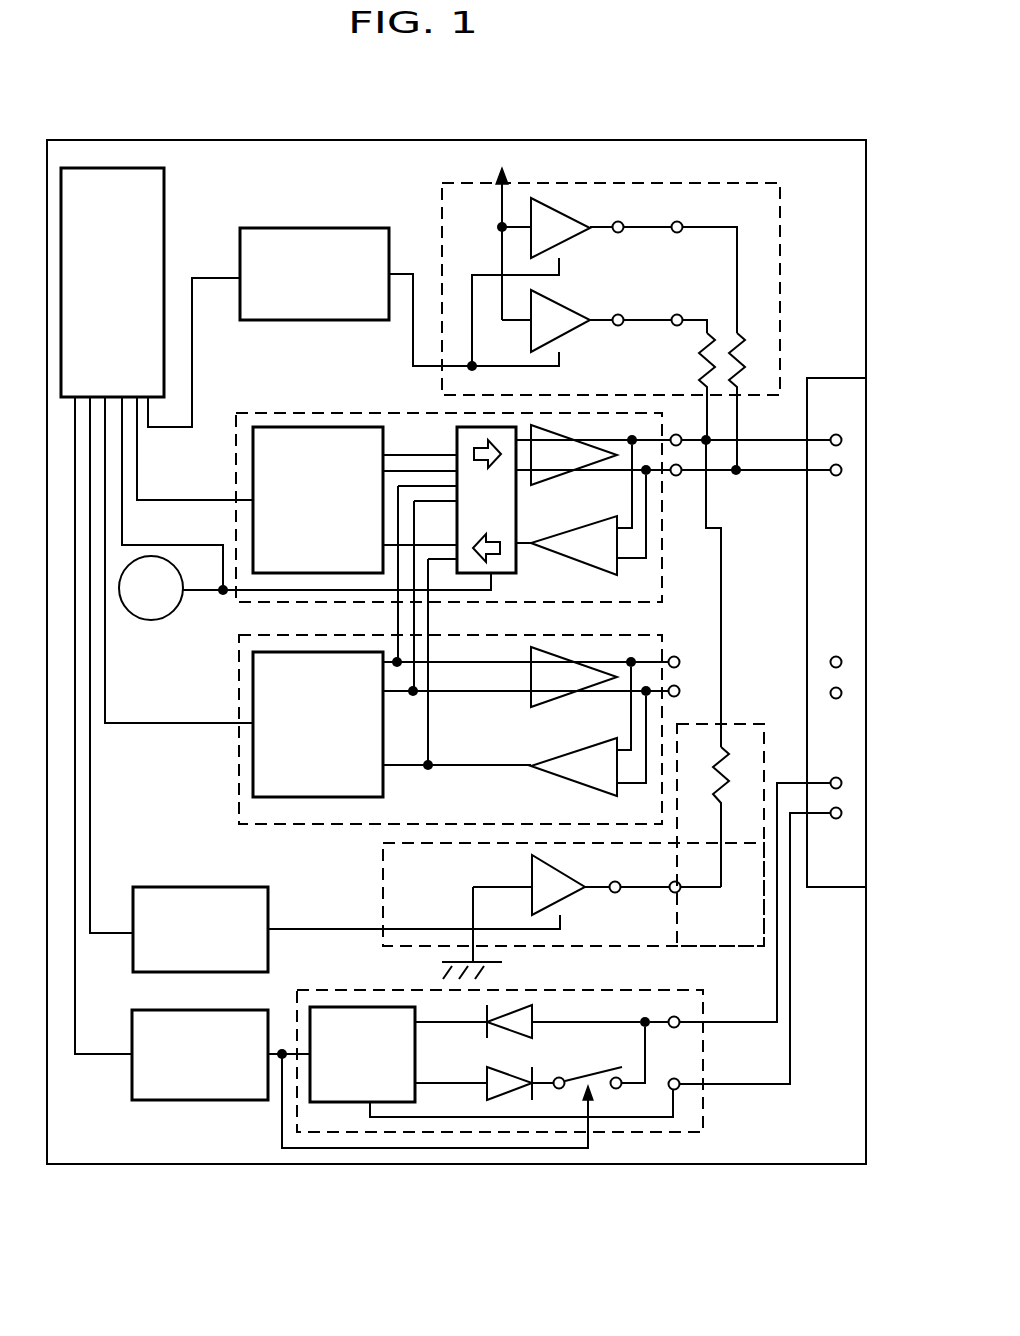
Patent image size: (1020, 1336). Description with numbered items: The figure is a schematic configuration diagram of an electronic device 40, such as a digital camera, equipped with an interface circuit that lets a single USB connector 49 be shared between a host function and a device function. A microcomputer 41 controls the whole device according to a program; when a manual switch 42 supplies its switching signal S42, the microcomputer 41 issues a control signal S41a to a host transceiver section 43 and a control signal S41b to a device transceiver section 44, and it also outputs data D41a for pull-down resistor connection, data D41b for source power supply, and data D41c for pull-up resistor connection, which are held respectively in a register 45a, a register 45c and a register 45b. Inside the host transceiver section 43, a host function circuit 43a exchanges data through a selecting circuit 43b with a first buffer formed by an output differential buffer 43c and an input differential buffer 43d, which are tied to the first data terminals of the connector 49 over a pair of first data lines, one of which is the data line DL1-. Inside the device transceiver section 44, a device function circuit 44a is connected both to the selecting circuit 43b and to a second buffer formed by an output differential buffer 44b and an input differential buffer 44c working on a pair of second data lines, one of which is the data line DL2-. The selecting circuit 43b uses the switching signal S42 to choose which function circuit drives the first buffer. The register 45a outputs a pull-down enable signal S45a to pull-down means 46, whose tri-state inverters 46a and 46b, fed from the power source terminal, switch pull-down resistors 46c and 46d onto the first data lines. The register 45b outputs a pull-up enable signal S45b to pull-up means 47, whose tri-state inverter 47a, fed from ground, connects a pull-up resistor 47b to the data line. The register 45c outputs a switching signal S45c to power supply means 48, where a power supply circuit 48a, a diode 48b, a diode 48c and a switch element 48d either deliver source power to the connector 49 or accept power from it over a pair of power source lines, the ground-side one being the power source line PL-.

The electronic device 40 is at (126, 140).
The microcomputer 41 is at (164, 216).
The switch 42 is at (166, 618).
The host transceiver section 43 is at (236, 460).
The host function circuit 43a is at (253, 525).
The selecting circuit 43b is at (457, 438).
The output differential buffer 43c is at (566, 454).
The input differential buffer 43d is at (580, 544).
The device transceiver section 44 is at (239, 776).
The device function circuit 44a is at (253, 686).
The output differential buffer 44b is at (553, 686).
The input differential buffer 44c is at (560, 770).
The register 45a is at (318, 228).
The register 45b is at (200, 887).
The register 45c is at (188, 1100).
The pull-down means 46 is at (592, 184).
The tri-state inverter 46a is at (573, 317).
The tri-state inverter 46b is at (572, 245).
The pull-down resistor 46c is at (700, 364).
The pull-down resistor 46d is at (745, 357).
The pull-up means 47 is at (383, 872).
The tri-state inverter 47a is at (571, 890).
The pull-up resistor 47b is at (720, 766).
The power supply means 48 is at (345, 990).
The power supply circuit 48a is at (415, 1050).
The diode 48b is at (510, 1074).
The diode 48c is at (532, 1016).
The switch element 48d is at (587, 1072).
The USB connector 49 is at (838, 378).
The data for pull-down resistor connection D41a is at (192, 355).
The data for source power supply D41b is at (97, 1054).
The data for pull-up resistor connection D41c is at (112, 935).
The control signal S41a is at (185, 500).
The control signal S41b is at (137, 723).
The switching signal S42 is at (200, 590).
The pull-down enable signal S45a is at (409, 274).
The pull-up enable signal S45b is at (335, 929).
The switching signal S45c is at (282, 1117).
The data line DL1- is at (773, 470).
The data line DL2- is at (655, 691).
The power source line PL- is at (765, 1086).